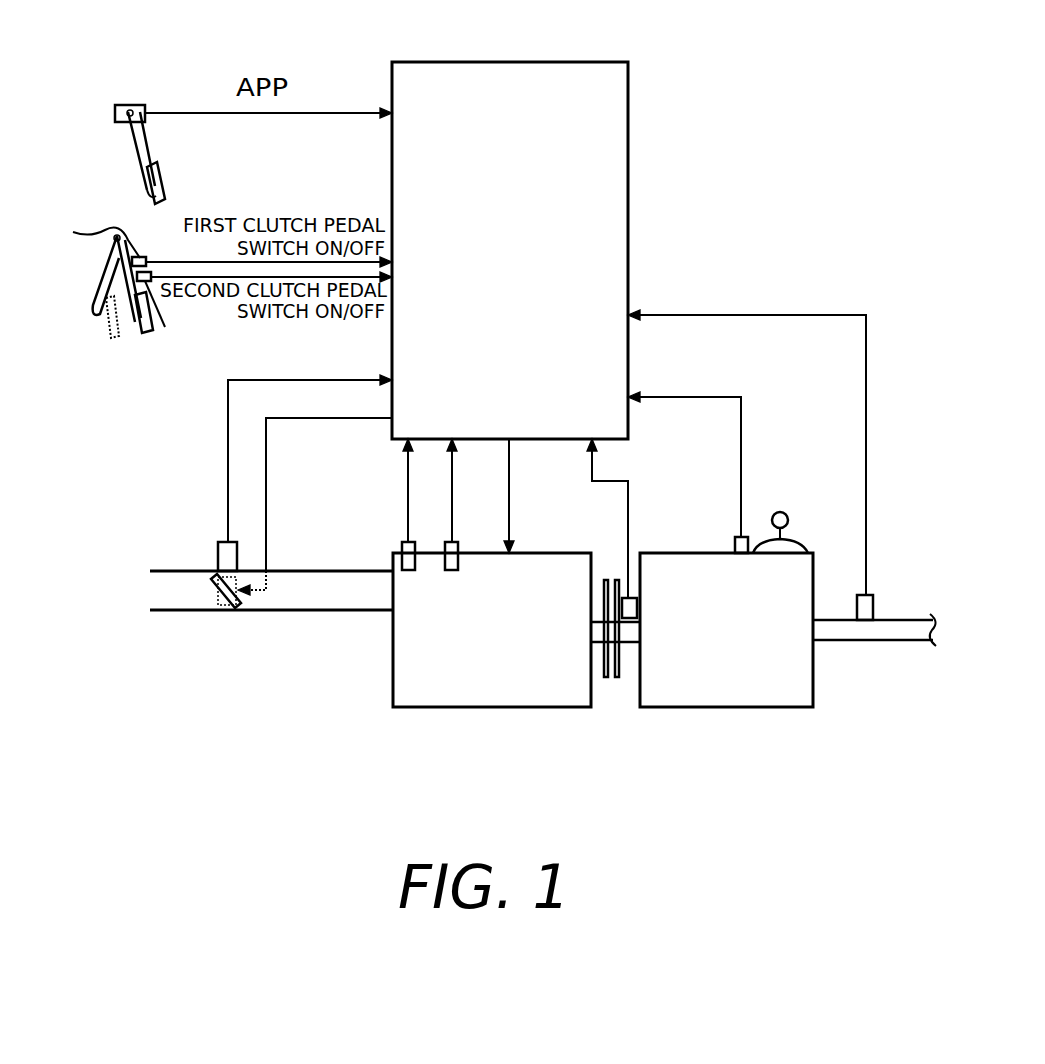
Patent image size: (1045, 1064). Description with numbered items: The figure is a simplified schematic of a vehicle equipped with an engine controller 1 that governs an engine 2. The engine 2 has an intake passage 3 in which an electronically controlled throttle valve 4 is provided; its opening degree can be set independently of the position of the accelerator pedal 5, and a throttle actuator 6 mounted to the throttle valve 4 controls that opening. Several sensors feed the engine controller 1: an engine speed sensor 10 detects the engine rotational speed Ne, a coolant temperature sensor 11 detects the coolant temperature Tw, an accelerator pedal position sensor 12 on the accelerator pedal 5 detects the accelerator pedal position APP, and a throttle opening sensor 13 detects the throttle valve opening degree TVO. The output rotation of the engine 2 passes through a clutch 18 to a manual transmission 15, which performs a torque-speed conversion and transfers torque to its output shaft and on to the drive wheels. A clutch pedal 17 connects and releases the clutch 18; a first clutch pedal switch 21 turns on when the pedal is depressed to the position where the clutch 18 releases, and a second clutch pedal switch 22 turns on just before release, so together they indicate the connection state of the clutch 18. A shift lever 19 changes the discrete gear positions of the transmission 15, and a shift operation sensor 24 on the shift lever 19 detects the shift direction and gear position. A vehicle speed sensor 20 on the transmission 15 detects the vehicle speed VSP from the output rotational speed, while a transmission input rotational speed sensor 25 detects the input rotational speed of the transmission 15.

The engine controller 1 is at (597, 68).
The engine 2 is at (558, 558).
The intake passage 3 is at (286, 613).
The throttle valve 4 is at (232, 613).
The accelerator pedal 5 is at (134, 156).
The throttle actuator 6 is at (214, 608).
The engine speed sensor 10 is at (402, 548).
The coolant temperature sensor 11 is at (445, 548).
The accelerator pedal position sensor 12 is at (137, 106).
The throttle opening sensor 13 is at (218, 548).
The transmission 15 is at (805, 574).
The clutch pedal 17 is at (132, 324).
The clutch 18 is at (612, 680).
The shift lever 19 is at (786, 512).
The vehicle speed sensor 20 is at (872, 604).
The first clutch pedal switch 21 is at (106, 272).
The second clutch pedal switch 22 is at (150, 330).
The shift operation sensor 24 is at (735, 540).
The transmission input rotational speed sensor 25 is at (630, 598).